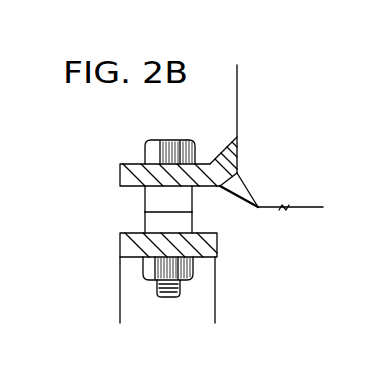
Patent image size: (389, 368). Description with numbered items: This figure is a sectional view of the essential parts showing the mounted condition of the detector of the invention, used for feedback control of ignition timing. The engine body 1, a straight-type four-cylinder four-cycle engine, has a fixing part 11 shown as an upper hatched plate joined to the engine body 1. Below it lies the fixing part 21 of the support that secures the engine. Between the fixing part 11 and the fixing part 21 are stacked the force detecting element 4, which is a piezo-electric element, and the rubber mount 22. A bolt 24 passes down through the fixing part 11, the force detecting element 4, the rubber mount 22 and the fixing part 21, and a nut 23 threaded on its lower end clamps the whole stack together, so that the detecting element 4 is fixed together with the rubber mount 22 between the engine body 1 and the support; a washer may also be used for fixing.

The engine body 1 is at (283, 209).
The fixing part 11 is at (136, 163).
The bolt 24 is at (144, 144).
The force detecting element 4 is at (150, 200).
The rubber mount 22 is at (197, 222).
The fixing part 21 is at (130, 293).
The nut 23 is at (143, 270).